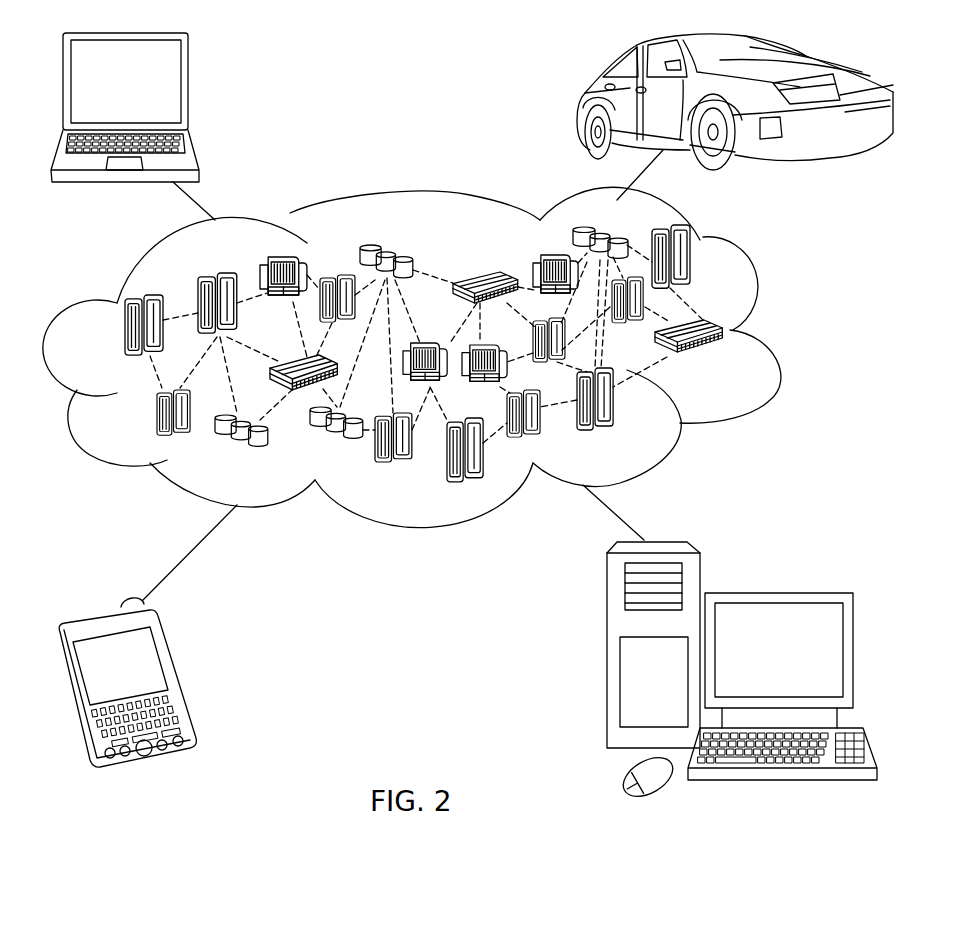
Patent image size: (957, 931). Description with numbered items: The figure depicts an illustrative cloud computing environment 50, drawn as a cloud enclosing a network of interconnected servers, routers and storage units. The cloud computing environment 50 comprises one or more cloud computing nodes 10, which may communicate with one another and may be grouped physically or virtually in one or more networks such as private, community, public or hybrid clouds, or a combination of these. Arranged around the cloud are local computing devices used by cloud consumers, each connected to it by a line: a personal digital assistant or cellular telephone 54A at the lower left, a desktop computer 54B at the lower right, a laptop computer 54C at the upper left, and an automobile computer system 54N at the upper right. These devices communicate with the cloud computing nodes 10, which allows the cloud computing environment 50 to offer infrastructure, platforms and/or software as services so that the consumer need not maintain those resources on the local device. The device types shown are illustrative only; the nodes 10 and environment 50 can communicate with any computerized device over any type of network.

The laptop computer 54C is at (188, 89).
The automobile computer system 54N is at (580, 102).
The personal digital assistant or cellular telephone 54A is at (182, 677).
The desktop computer 54B is at (783, 593).
The cloud computing environment 50 is at (777, 337).
The cloud computing node 10 is at (722, 358).